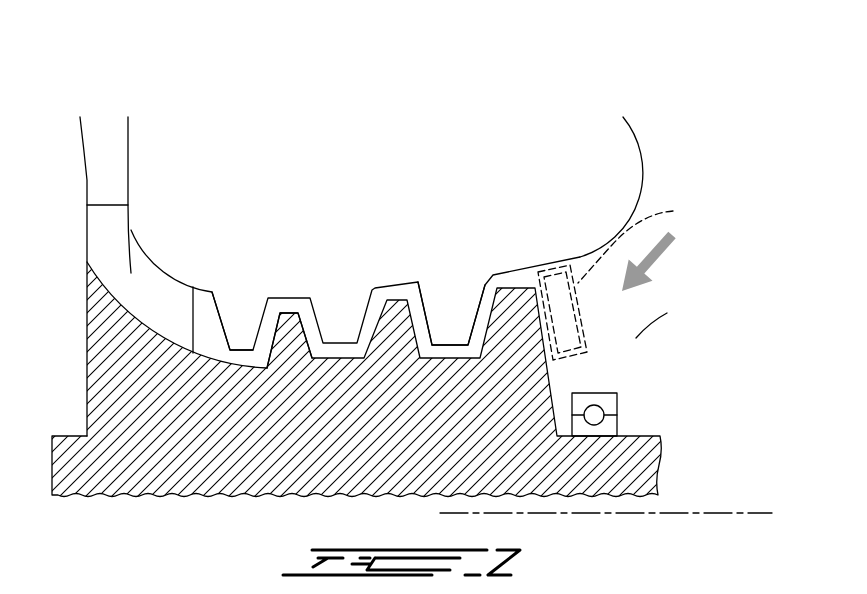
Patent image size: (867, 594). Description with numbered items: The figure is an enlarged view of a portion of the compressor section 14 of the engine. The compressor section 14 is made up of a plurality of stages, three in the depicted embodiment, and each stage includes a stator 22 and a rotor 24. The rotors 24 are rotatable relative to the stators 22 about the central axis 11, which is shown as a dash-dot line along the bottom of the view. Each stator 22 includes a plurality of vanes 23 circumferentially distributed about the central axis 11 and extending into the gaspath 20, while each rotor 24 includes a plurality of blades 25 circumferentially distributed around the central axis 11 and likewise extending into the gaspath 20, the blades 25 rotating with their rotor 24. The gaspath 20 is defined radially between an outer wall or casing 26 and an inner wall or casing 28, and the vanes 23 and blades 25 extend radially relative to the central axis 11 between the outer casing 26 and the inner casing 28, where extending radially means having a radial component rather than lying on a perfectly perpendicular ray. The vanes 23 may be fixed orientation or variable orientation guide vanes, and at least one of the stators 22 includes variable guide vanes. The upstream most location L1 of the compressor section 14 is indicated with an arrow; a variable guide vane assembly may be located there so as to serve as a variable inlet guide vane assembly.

The central axis 11 is at (699, 510).
The compressor section 14 is at (327, 127).
The gaspath 20 is at (127, 242).
The stator 22 is at (338, 310).
The vane 23 is at (240, 313).
The rotor 24 is at (390, 289).
The blade 25 is at (512, 313).
The outer casing 26 is at (585, 253).
The inner casing 28 is at (636, 338).
The upstream most location L1 is at (647, 247).